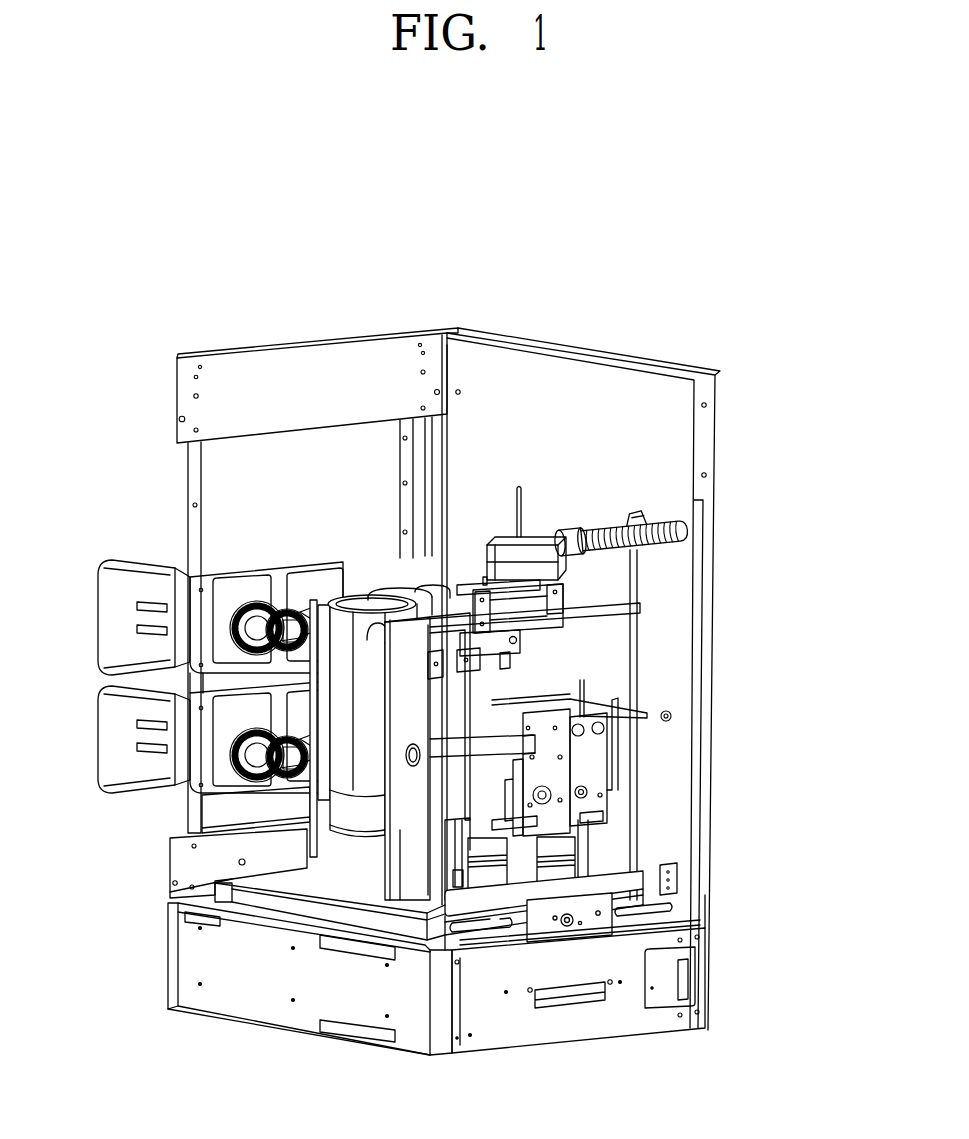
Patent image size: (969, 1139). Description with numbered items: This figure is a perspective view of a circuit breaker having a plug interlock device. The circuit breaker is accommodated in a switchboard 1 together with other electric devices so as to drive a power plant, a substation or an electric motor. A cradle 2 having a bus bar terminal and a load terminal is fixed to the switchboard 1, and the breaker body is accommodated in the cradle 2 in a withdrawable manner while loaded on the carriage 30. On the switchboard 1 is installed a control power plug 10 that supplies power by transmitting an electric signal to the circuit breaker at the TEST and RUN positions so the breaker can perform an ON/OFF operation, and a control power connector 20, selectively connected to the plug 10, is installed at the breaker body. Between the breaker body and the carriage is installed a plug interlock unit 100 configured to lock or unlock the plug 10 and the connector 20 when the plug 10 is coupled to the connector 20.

The switchboard 1 is at (337, 698).
The cradle 2 is at (411, 832).
The control power plug 10 is at (543, 565).
The control power connector 20 is at (546, 604).
The carriage 30 is at (297, 908).
The plug interlock unit 100 is at (532, 646).